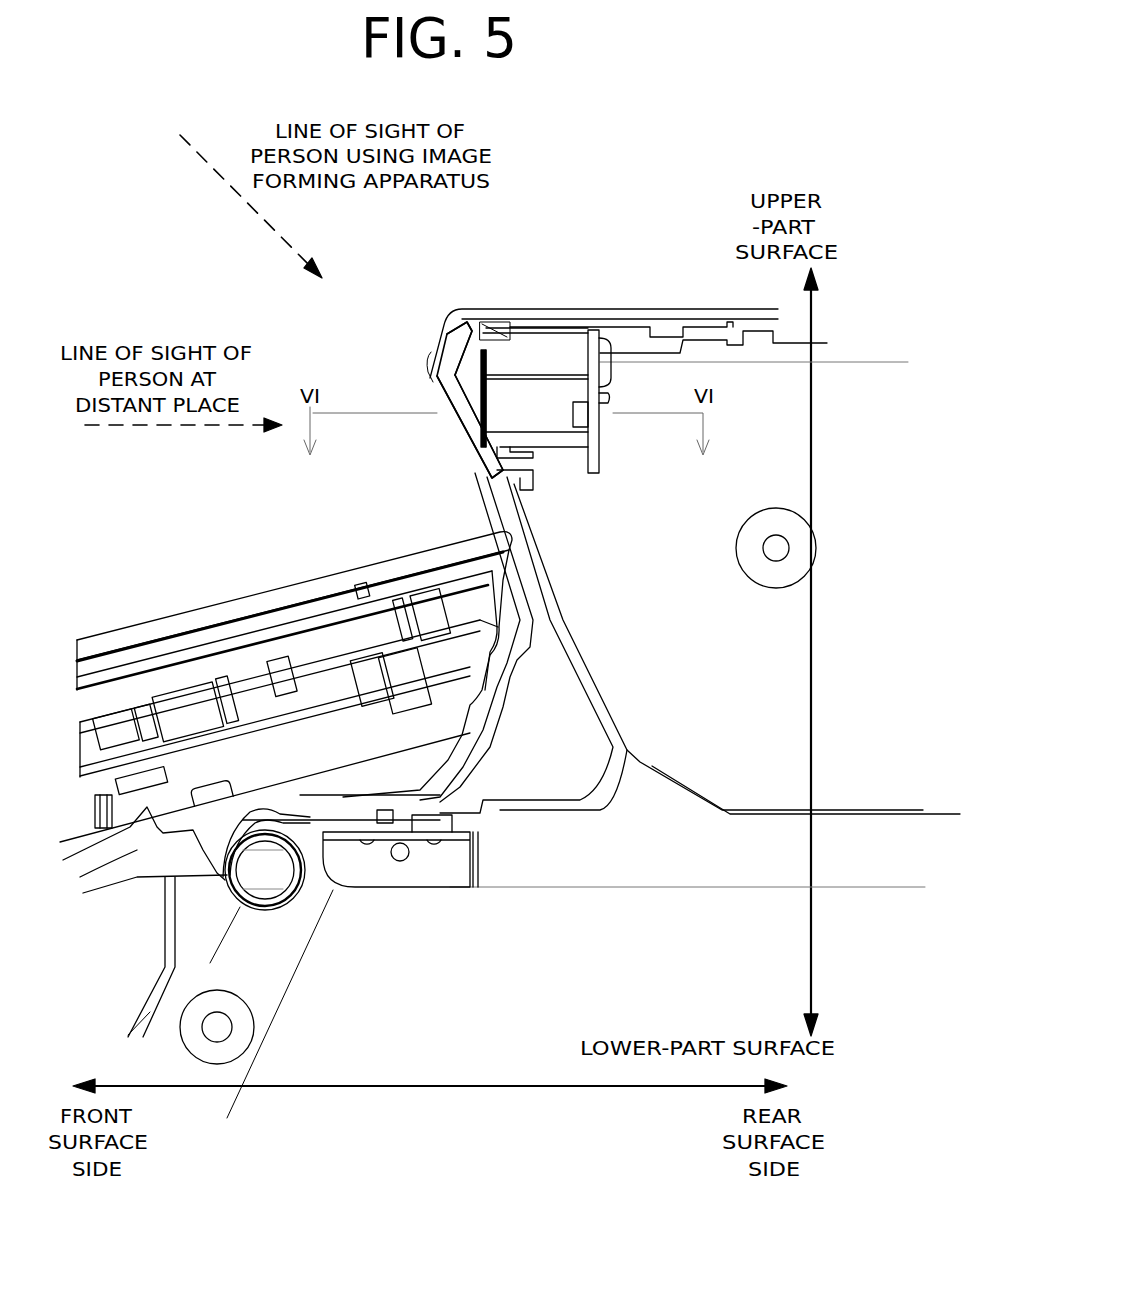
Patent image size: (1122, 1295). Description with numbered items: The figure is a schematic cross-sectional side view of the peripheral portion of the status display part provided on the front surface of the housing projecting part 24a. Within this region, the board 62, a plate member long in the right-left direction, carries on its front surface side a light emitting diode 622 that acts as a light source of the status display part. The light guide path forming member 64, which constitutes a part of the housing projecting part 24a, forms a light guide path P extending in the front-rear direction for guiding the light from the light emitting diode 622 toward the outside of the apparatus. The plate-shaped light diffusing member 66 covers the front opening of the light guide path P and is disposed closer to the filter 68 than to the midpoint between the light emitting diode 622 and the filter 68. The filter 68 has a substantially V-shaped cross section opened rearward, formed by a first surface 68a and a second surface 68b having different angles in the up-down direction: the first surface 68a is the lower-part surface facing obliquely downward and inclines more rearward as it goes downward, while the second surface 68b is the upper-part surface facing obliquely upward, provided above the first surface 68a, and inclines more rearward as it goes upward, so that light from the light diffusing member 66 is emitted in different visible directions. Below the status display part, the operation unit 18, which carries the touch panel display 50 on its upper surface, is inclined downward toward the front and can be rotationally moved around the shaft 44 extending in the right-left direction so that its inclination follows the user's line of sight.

The operation unit 18 is at (460, 533).
The housing projecting part 24a is at (650, 310).
The shaft 44 is at (262, 880).
The touch panel display 50 is at (190, 620).
The board 62 is at (600, 453).
The light emitting diode 622 is at (583, 415).
The light guide path forming member 64 is at (497, 355).
The light diffusing member 66 is at (495, 407).
The filter 68 is at (421, 382).
The first surface 68a is at (447, 420).
The second surface 68b is at (447, 350).
The light guide path P is at (543, 416).